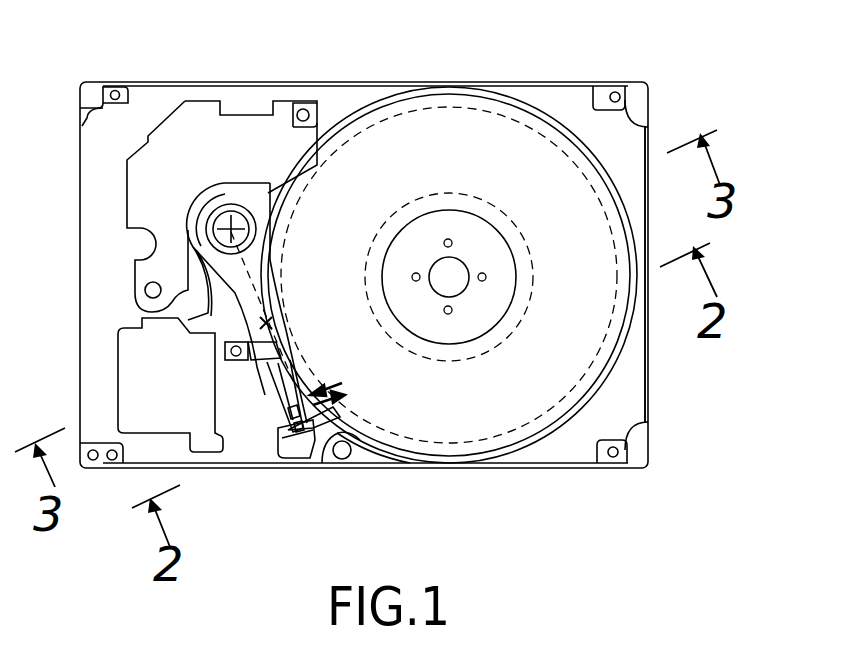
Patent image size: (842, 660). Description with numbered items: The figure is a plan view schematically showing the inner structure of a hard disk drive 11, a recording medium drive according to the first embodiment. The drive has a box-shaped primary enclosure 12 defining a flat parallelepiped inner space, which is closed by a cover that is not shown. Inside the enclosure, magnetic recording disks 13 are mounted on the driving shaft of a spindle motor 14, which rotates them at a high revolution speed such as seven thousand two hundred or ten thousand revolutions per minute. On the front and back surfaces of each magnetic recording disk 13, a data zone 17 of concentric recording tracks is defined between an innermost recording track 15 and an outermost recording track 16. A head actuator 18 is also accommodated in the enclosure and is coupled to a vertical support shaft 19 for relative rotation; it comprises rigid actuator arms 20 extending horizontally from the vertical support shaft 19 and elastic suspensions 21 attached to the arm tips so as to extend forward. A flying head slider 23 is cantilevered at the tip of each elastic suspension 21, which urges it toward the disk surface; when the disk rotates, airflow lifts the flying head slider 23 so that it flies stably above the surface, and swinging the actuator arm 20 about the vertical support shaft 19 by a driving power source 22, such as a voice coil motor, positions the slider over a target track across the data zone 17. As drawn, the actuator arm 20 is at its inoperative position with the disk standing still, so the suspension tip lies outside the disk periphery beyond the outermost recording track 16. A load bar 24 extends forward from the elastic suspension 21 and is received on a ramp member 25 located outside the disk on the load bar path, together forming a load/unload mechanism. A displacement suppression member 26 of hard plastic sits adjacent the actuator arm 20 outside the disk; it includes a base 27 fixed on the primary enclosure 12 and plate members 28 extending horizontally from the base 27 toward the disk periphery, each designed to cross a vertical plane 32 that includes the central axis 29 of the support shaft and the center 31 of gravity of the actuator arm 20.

The hard disk drive 11 is at (393, 74).
The primary enclosure 12 is at (647, 403).
The magnetic recording disk 13 is at (645, 340).
The spindle motor 14 is at (476, 255).
The innermost recording track 15 is at (511, 223).
The outermost recording track 16 is at (449, 275).
The data zone 17 is at (575, 326).
The head actuator 18 is at (208, 273).
The vertical support shaft 19 is at (222, 218).
The actuator arm 20 is at (270, 262).
The elastic suspension 21 is at (318, 392).
The driving power source 22 is at (188, 112).
The flying head slider 23 is at (288, 410).
The load bar 24 is at (288, 458).
The ramp member 25 is at (318, 455).
The displacement suppression member 26 is at (250, 361).
The base 27 is at (225, 350).
The plate member 28 is at (280, 353).
The central axis 29 is at (254, 221).
The center of gravity 31 is at (272, 320).
The vertical plane 32 is at (229, 213).